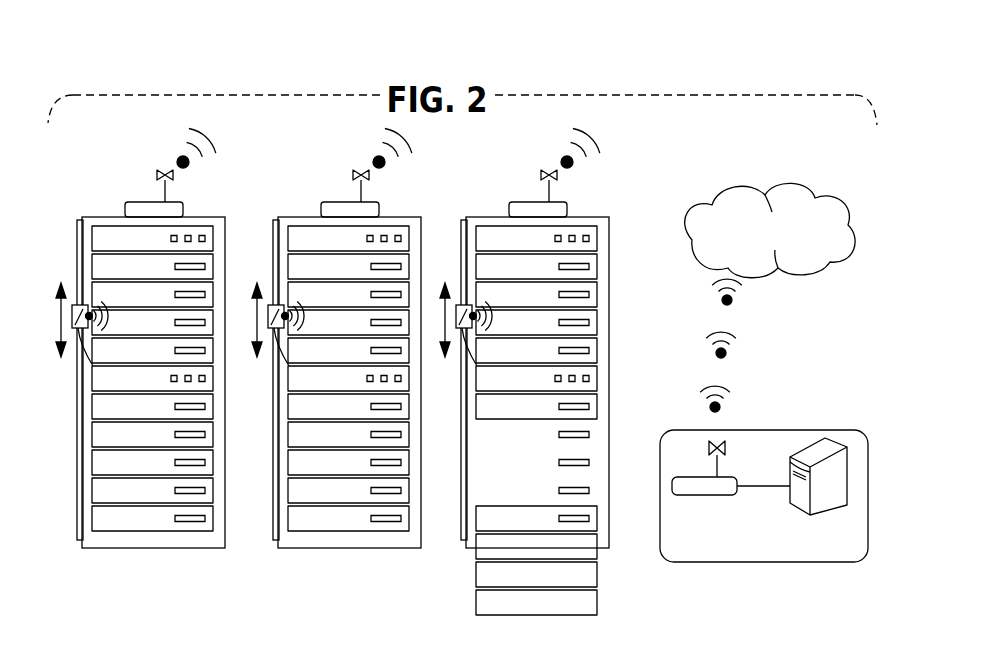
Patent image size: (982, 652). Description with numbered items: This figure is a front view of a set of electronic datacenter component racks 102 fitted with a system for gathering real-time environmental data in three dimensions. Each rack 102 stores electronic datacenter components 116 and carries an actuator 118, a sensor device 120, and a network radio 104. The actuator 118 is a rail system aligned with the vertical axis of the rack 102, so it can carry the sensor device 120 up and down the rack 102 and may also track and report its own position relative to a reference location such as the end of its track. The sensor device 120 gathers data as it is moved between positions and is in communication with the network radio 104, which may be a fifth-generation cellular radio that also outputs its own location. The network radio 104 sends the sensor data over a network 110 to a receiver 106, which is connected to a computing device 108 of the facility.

The rack 102 is at (226, 239).
The network radio 104 is at (167, 191).
The receiver 106 is at (702, 496).
The computing device 108 is at (840, 462).
The network 110 is at (769, 190).
The electronic datacenter components 116 is at (595, 403).
The actuator 118 is at (77, 510).
The sensor device 120 is at (92, 366).